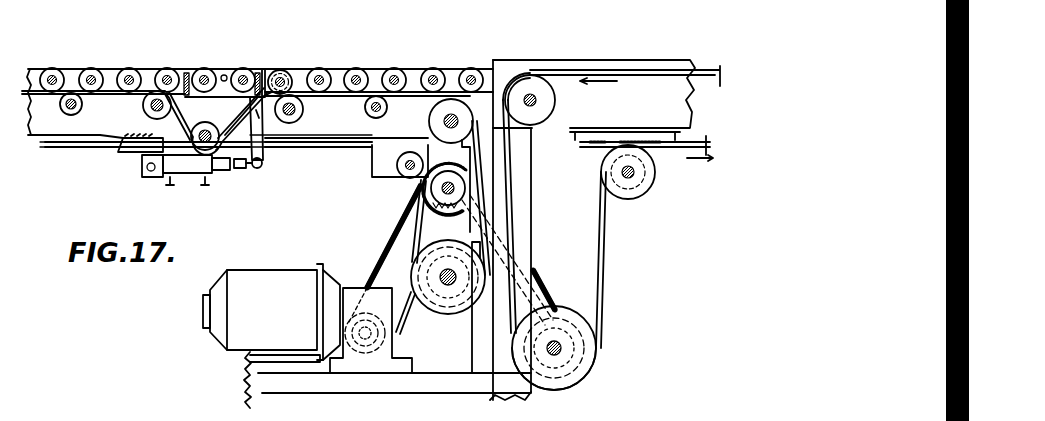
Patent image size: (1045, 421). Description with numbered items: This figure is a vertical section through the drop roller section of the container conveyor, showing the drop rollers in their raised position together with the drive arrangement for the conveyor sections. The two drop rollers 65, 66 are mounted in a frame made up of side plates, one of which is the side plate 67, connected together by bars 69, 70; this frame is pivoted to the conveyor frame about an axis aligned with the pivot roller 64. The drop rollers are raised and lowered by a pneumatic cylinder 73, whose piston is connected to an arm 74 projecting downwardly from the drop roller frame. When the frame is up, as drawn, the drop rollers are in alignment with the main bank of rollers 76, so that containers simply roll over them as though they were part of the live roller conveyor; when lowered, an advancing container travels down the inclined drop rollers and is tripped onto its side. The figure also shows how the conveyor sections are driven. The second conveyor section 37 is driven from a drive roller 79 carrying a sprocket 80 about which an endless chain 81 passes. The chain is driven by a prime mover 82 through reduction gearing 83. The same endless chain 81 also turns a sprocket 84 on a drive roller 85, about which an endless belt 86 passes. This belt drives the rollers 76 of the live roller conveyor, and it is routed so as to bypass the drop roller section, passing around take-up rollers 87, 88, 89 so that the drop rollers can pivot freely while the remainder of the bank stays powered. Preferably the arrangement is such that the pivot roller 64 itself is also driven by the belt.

The second conveyor section 37 is at (633, 70).
The pivot roller 64 is at (290, 74).
The drop roller 65 is at (243, 67).
The drop roller 66 is at (205, 67).
The side plate 67 is at (268, 75).
The bar 69 is at (186, 72).
The bar 70 is at (258, 72).
The pneumatic cylinder 73 is at (190, 183).
The arm 74 is at (270, 150).
The main bank of rollers 76 is at (93, 67).
The drive roller 79 is at (588, 347).
The sprocket 80 is at (582, 366).
The endless chain 81 is at (540, 278).
The prime mover 82 is at (280, 272).
The reduction gearing 83 is at (390, 342).
The sprocket 84 is at (448, 314).
The drive roller 85 is at (405, 250).
The endless belt 86 is at (325, 150).
The take-up roller 87 is at (144, 103).
The take-up roller 88 is at (212, 124).
The take-up roller 89 is at (304, 111).